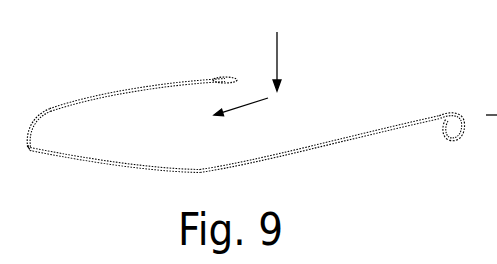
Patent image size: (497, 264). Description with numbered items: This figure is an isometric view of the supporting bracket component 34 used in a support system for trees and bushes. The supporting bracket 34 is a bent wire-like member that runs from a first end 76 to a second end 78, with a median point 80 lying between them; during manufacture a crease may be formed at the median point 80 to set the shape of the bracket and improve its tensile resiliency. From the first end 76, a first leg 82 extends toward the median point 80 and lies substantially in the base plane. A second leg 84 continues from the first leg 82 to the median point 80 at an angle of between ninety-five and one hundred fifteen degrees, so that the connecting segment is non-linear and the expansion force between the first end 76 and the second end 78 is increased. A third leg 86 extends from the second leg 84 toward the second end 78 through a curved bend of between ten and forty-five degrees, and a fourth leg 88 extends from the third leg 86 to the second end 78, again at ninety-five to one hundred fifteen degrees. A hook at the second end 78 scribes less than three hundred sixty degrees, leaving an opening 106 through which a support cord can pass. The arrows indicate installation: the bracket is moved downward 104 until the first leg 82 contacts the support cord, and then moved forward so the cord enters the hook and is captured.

The supporting bracket component 34 is at (270, 160).
The first end 76 is at (212, 79).
The second end 78 is at (436, 116).
The median point 80 is at (37, 146).
The first leg 82 is at (148, 88).
The second leg 84 is at (30, 134).
The third leg 86 is at (111, 162).
The fourth leg 88 is at (372, 134).
The downward movement 104 is at (278, 50).
The opening 106 is at (262, 101).